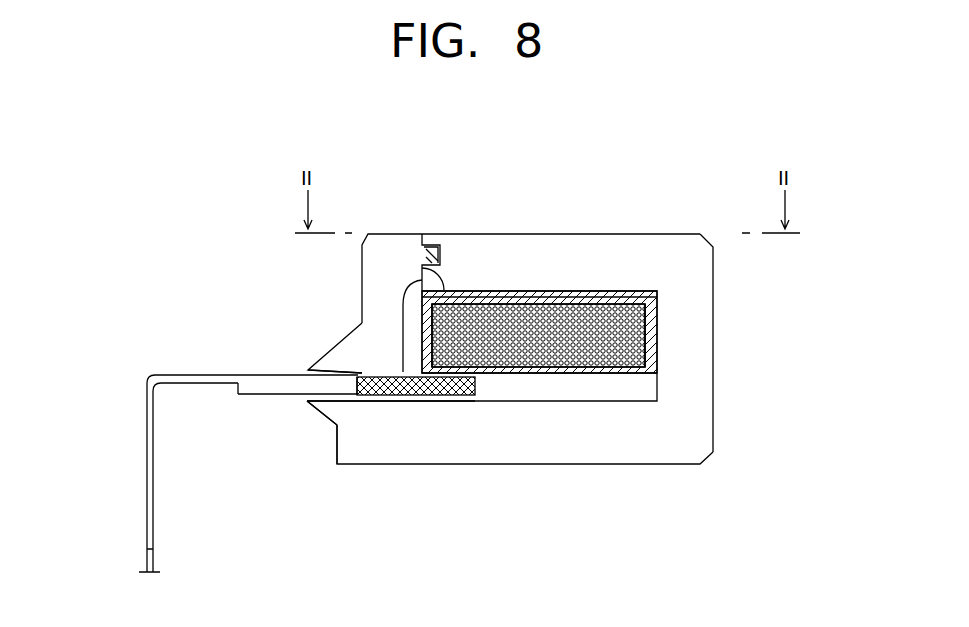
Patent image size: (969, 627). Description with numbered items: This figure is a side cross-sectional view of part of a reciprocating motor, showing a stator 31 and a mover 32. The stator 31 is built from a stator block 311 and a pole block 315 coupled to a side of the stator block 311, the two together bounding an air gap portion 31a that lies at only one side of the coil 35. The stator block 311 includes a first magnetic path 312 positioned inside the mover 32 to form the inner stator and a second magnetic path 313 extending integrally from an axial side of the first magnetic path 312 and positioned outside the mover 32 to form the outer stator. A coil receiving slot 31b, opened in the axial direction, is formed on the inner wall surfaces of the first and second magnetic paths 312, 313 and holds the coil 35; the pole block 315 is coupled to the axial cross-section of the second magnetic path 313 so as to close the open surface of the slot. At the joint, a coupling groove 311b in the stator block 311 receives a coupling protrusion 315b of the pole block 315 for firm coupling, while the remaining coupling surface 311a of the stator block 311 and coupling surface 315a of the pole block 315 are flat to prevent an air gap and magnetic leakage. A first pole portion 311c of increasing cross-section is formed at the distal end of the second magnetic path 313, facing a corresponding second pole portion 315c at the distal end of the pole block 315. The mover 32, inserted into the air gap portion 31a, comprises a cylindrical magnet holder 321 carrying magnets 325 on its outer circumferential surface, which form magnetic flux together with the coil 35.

The stator 31 is at (509, 222).
The air gap portion 31a is at (310, 398).
The coil receiving slot 31b is at (572, 298).
The mover 32 is at (352, 281).
The coil 35 is at (535, 303).
The stator block 311 is at (615, 233).
The coupling surface of the stator block 311a is at (410, 300).
The coupling groove 311b is at (428, 247).
The first pole portion 311c is at (365, 397).
The first magnetic path 312 is at (600, 465).
The second magnetic path 313 is at (670, 245).
The pole block 315 is at (382, 247).
The coupling surface of the pole block 315a is at (452, 377).
The coupling protrusion 315b is at (424, 247).
The second pole portion 315c is at (324, 374).
The magnet holder 321 is at (275, 375).
The magnet 325 is at (358, 377).